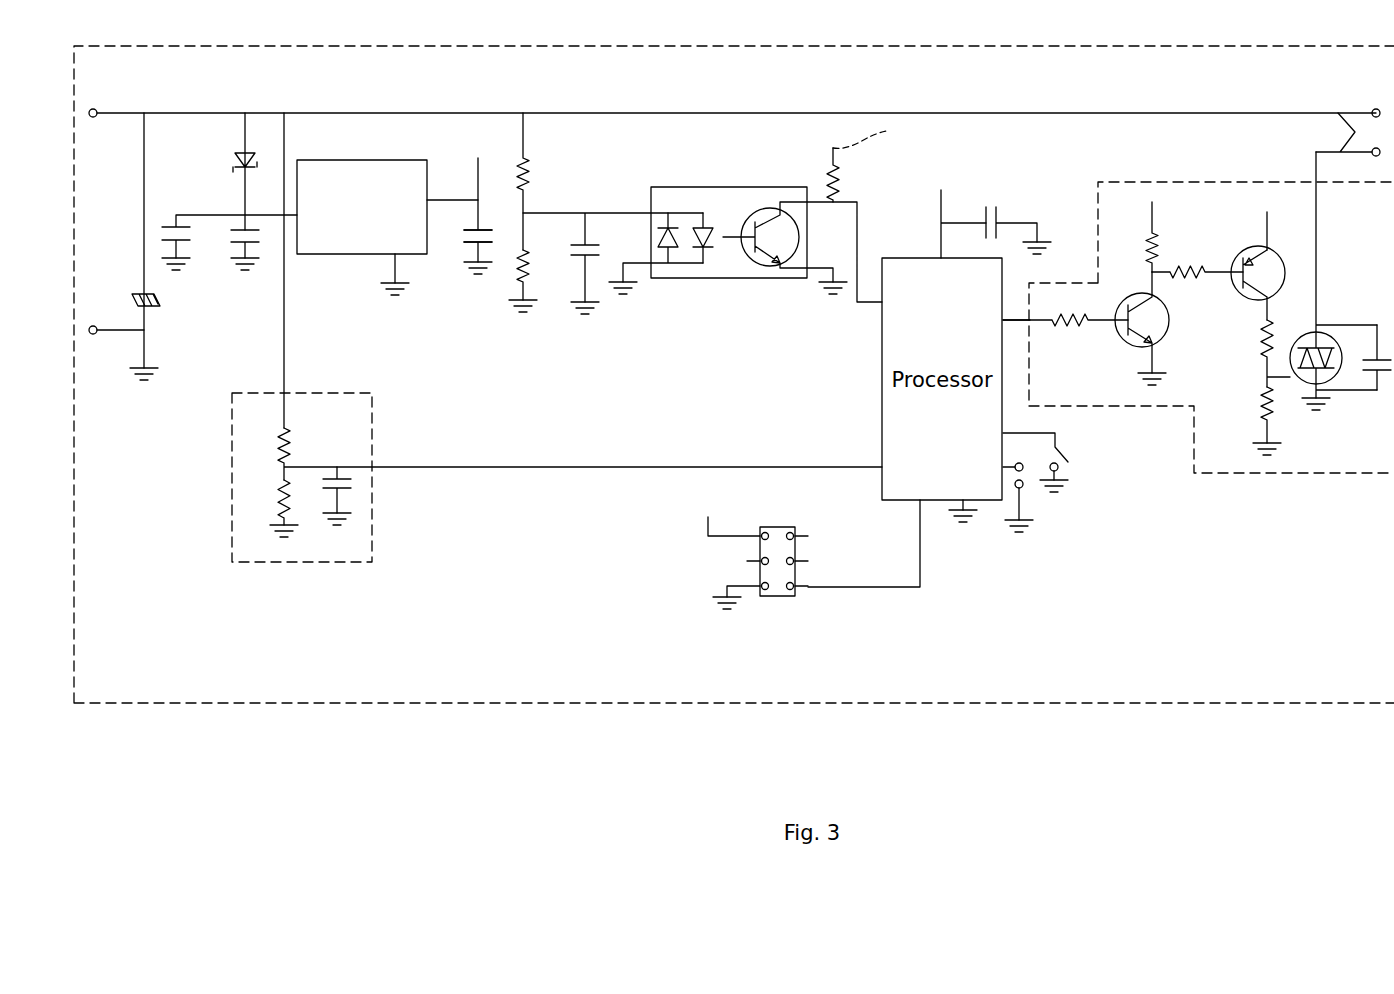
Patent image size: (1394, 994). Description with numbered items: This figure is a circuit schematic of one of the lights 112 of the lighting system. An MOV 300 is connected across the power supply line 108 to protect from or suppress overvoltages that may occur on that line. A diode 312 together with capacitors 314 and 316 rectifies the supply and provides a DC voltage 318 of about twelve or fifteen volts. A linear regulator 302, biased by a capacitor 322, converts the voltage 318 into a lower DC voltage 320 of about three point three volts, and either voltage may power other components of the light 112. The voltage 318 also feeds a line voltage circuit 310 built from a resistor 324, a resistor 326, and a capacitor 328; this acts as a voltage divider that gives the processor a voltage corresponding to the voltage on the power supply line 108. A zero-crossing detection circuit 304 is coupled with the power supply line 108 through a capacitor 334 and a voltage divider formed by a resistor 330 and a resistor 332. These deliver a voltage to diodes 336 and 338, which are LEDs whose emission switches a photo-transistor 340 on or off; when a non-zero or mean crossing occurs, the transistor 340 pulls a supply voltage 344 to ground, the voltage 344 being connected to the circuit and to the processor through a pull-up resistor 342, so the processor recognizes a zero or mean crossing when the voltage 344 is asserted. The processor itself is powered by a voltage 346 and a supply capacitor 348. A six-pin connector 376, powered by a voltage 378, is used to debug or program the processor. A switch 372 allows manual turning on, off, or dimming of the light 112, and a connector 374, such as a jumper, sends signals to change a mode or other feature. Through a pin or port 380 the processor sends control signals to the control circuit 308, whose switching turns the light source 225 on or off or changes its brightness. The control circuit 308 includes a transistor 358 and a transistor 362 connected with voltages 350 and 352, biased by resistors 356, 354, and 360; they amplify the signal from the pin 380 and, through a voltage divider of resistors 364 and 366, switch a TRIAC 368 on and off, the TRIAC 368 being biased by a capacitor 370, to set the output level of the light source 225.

The power supply line 108 is at (127, 120).
The light 112 is at (1203, 703).
The light source 225 is at (1353, 130).
The MOV 300 is at (153, 315).
The linear regulator 302 is at (373, 159).
The zero-crossing detection circuit 304 is at (675, 186).
The control circuit 308 is at (1180, 182).
The line voltage circuit 310 is at (340, 562).
The diode 312 is at (233, 165).
The capacitor 314 is at (168, 222).
The capacitor 316 is at (227, 243).
The DC voltage 318 is at (297, 140).
The lower DC voltage 320 is at (486, 160).
The capacitor 322 is at (455, 238).
The resistor 324 is at (272, 448).
The resistor 326 is at (278, 498).
The capacitor 328 is at (353, 485).
The resistor 330 is at (537, 177).
The resistor 332 is at (517, 270).
The capacitor 334 is at (570, 260).
The diode 336 is at (662, 253).
The diode 338 is at (700, 255).
The transistor 340 is at (753, 270).
The pull-up resistor 342 is at (827, 162).
The supply voltage 344 is at (884, 133).
The voltage 346 is at (932, 190).
The supply capacitor 348 is at (993, 203).
The voltage 350 is at (1157, 205).
The voltage 352 is at (1274, 214).
The resistor 354 is at (1145, 235).
The resistor 356 is at (1068, 330).
The transistor 358 is at (1167, 333).
The resistor 360 is at (1183, 257).
The transistor 362 is at (1282, 250).
The resistor 364 is at (1260, 340).
The resistor 366 is at (1260, 410).
The TRIAC 368 is at (1337, 343).
The capacitor 370 is at (1363, 367).
The switch 372 is at (1068, 470).
The connector 374 is at (1025, 495).
The connector 376 is at (780, 595).
The voltage 378 is at (708, 517).
The pin or port 380 is at (1018, 322).